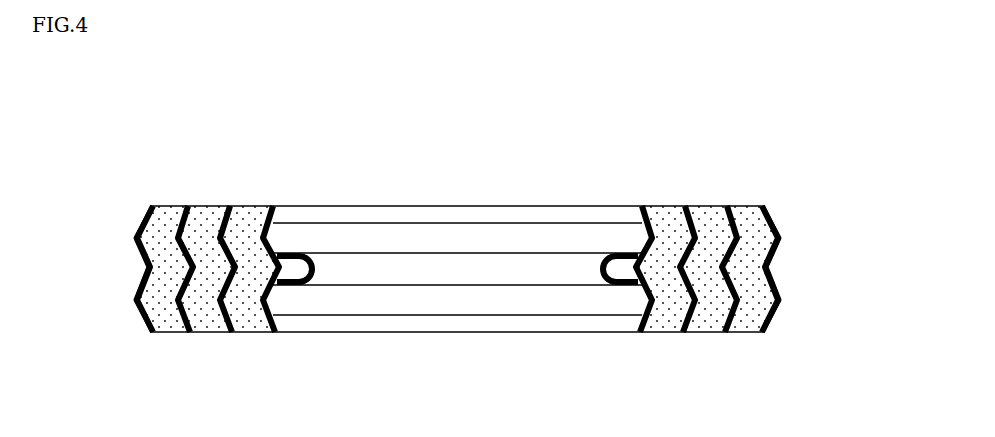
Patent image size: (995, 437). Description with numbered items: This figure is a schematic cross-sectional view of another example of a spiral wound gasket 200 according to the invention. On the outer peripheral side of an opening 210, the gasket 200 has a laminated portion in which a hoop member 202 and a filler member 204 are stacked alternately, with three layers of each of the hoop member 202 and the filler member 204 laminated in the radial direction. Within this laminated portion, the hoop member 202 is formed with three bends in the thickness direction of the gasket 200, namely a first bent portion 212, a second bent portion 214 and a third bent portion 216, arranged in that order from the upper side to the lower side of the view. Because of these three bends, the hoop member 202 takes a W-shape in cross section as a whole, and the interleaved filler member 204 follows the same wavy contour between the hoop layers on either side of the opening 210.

The spiral wound gasket 200 is at (425, 178).
The hoop member 202 is at (765, 323).
The filler member 204 is at (754, 221).
The opening 210 is at (638, 321).
The first bent portion 212 is at (141, 230).
The second bent portion 214 is at (150, 267).
The third bent portion 216 is at (137, 303).